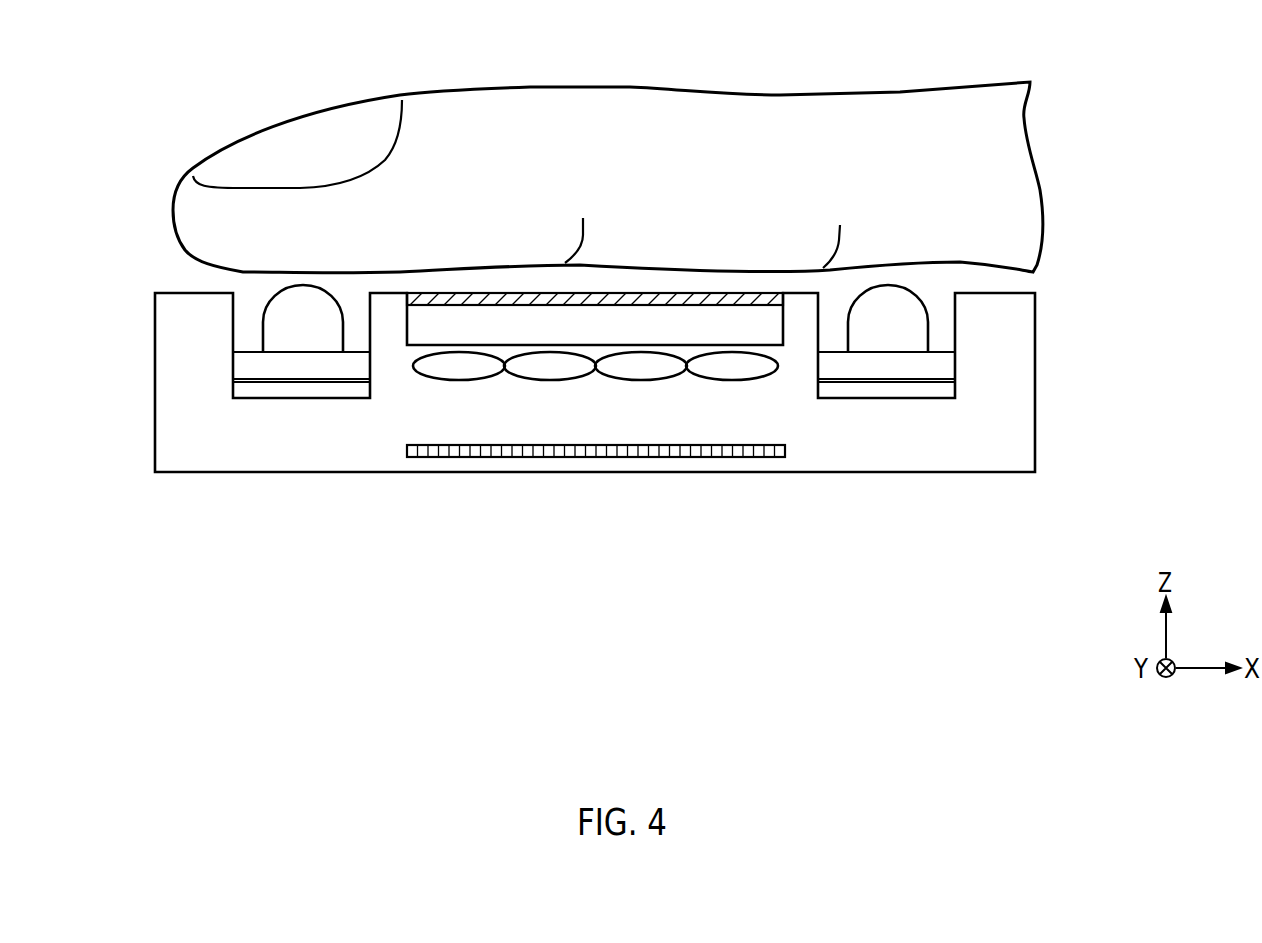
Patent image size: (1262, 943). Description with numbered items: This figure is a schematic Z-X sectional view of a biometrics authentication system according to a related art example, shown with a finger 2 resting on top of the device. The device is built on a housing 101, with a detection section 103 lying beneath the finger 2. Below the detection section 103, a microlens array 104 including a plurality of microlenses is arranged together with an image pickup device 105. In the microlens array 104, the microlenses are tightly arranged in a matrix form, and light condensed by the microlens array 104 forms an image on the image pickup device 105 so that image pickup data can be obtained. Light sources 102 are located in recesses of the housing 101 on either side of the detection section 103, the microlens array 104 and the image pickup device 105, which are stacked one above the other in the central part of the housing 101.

The finger 2 is at (817, 93).
The housing 101 is at (1025, 318).
The light source 102 is at (253, 367).
The detection section 103 is at (778, 297).
The microlens array 104 is at (758, 363).
The image pickup device 105 is at (785, 450).